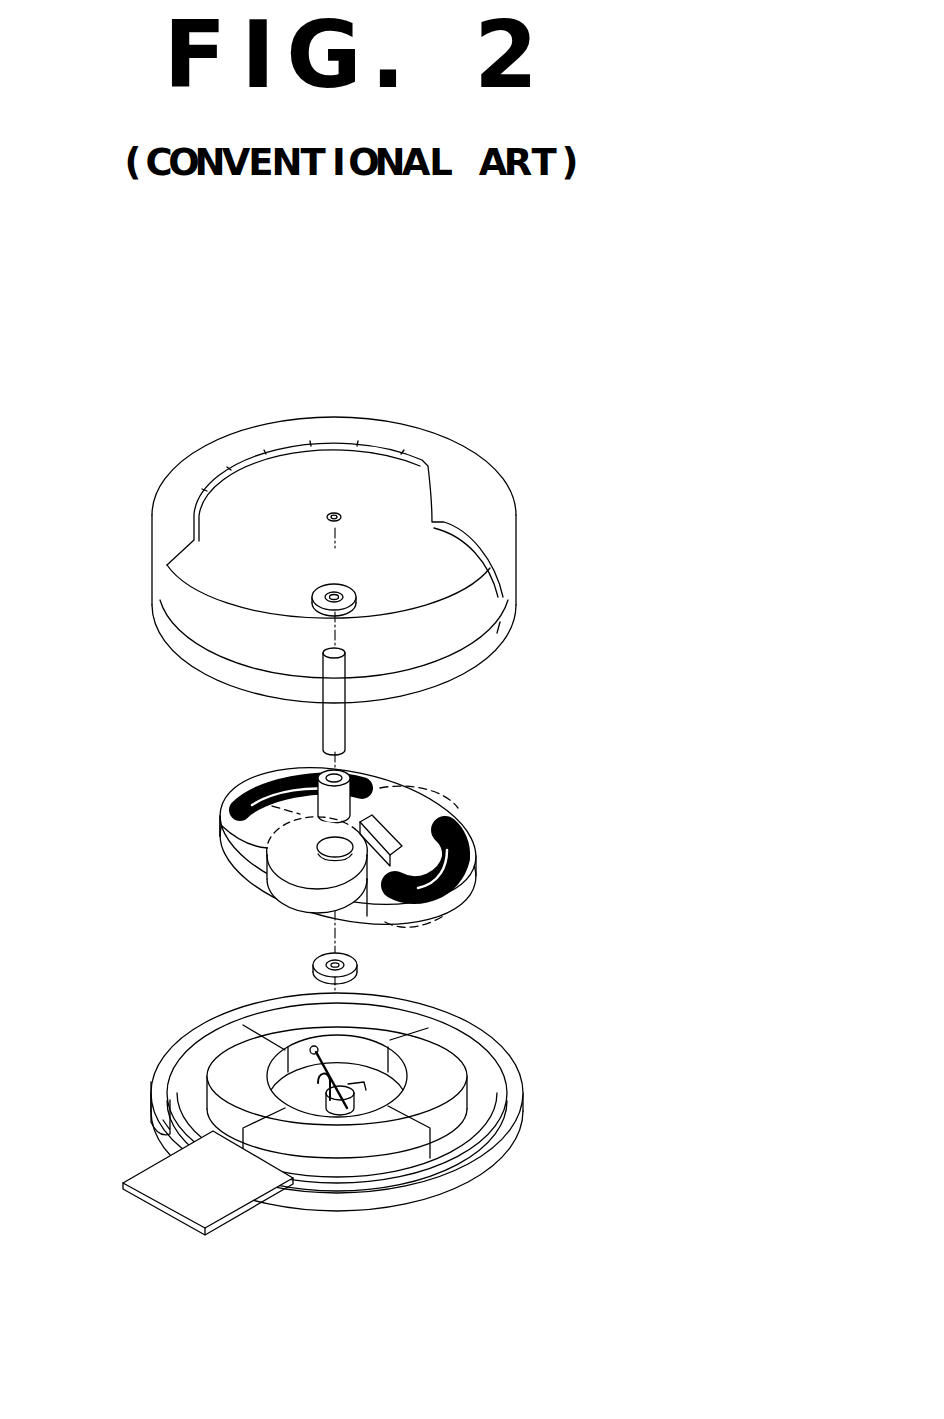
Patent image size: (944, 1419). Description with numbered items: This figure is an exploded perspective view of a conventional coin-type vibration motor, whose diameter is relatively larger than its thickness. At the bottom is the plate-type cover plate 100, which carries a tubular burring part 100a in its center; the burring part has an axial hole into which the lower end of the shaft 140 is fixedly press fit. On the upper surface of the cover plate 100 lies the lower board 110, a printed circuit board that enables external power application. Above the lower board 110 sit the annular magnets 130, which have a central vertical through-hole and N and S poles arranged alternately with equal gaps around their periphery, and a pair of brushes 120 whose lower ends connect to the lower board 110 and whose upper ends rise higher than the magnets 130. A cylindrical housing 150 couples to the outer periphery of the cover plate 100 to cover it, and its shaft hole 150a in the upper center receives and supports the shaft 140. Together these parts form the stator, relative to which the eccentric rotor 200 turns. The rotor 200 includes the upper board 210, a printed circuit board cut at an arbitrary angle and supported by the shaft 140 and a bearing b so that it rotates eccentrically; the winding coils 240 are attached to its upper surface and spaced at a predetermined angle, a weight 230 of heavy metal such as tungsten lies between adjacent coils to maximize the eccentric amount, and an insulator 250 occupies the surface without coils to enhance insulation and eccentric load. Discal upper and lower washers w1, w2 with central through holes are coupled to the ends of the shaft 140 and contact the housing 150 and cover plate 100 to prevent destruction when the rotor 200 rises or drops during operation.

The cover plate 100 is at (520, 1098).
The tubular burring part 100a is at (388, 1090).
The lower board 110 is at (196, 1209).
The brushes 120 is at (313, 1050).
The magnets 130 is at (390, 1131).
The shaft 140 is at (323, 723).
The cylindrical housing 150 is at (495, 523).
The shaft hole 150a is at (334, 519).
The eccentric rotor 200 is at (460, 779).
The upper board 210 is at (298, 912).
The weight 230 is at (440, 810).
The winding coils 240 is at (468, 846).
The insulator 250 is at (308, 876).
The bearing b is at (225, 837).
The upper washer w1 is at (350, 597).
The lower washer w2 is at (358, 963).